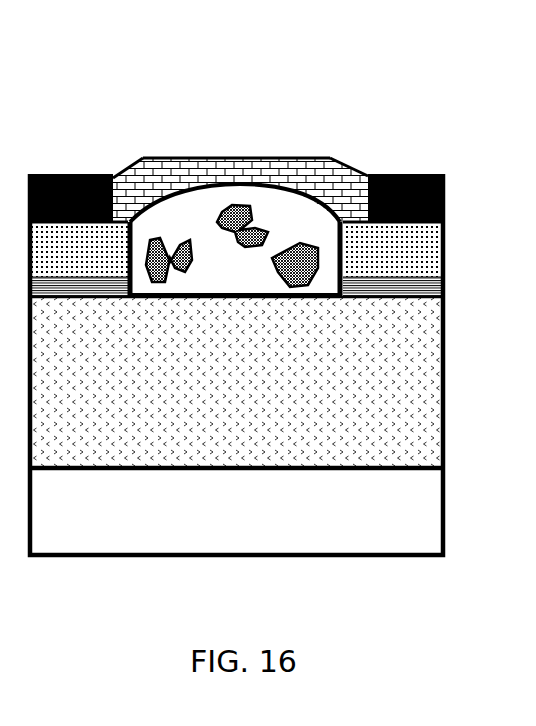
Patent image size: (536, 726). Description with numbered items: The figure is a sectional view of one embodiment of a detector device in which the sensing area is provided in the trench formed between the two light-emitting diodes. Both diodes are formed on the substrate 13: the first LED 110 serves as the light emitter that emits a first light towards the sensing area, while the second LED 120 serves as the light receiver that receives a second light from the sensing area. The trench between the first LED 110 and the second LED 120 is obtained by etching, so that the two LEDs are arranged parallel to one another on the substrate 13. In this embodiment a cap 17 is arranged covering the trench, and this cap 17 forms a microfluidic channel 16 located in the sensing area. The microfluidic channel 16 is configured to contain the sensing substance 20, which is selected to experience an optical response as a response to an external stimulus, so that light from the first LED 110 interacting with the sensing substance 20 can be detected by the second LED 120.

The substrate 13 is at (137, 515).
The microfluidic channel 16 is at (255, 157).
The cap 17 is at (226, 200).
The sensing substance 20 is at (157, 238).
The first LED 110 is at (339, 160).
The second LED 120 is at (130, 163).